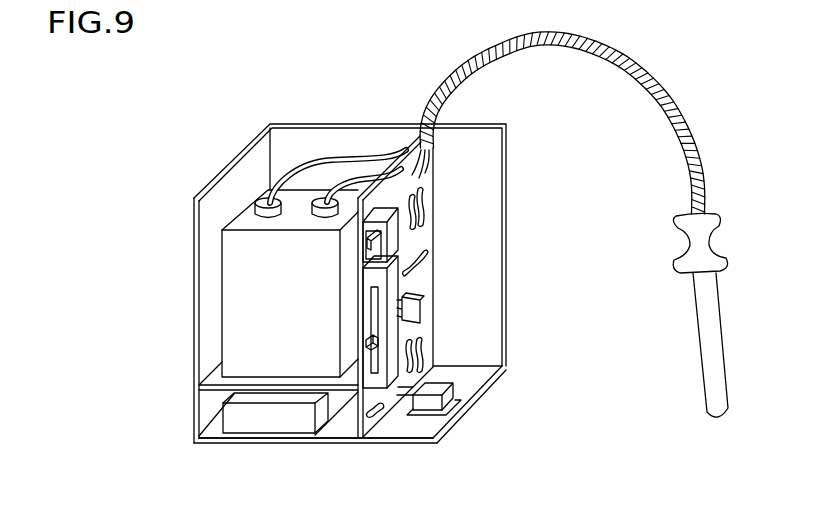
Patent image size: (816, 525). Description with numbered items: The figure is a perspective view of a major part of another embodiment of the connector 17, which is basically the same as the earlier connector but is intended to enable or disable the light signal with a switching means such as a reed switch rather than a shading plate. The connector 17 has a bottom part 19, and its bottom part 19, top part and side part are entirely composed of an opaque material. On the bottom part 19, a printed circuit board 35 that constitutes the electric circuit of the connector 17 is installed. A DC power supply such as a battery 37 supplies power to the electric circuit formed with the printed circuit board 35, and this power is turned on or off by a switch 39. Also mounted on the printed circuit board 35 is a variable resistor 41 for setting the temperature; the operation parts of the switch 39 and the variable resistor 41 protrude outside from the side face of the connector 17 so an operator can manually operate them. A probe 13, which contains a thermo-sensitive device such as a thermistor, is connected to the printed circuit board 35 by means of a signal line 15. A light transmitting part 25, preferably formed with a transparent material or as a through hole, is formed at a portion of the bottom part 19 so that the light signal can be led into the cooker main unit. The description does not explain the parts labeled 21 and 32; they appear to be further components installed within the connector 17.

The probe 13 is at (704, 336).
The signal line 15 is at (661, 100).
The connector 17 is at (183, 206).
The bottom part 19 is at (302, 445).
The lower component box 21 is at (237, 417).
The light transmitting part 25 is at (436, 416).
The small component box 32 is at (451, 397).
The printed circuit board 35 is at (422, 175).
The battery 37 is at (237, 291).
The switch 39 is at (380, 257).
The variable resistor 41 is at (376, 351).